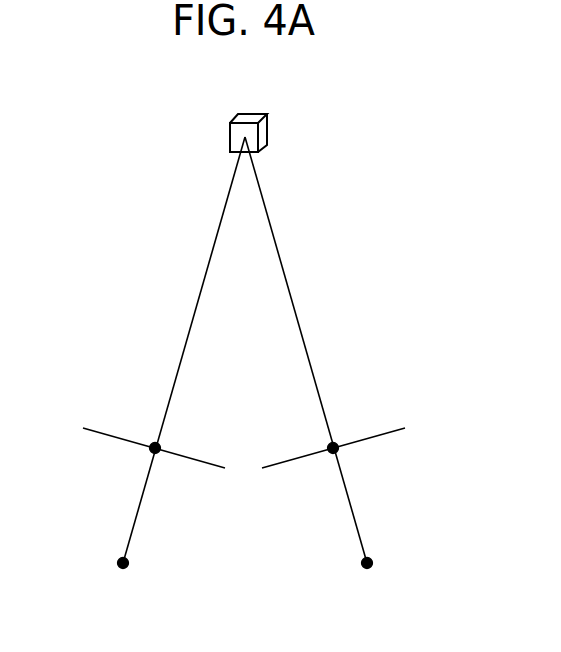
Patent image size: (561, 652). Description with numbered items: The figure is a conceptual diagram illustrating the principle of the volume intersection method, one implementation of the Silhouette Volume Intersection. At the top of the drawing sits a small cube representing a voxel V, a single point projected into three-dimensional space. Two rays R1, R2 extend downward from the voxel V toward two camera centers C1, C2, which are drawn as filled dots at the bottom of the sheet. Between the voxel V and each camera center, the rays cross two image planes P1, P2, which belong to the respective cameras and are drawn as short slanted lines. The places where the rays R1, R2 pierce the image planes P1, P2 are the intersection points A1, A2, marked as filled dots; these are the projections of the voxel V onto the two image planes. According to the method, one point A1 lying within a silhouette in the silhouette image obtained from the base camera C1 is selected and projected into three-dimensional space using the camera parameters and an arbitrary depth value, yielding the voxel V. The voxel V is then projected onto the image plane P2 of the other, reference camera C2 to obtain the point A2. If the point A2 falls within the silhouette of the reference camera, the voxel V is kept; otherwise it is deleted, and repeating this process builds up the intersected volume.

The voxel V is at (268, 130).
The ray R1 is at (270, 225).
The ray R2 is at (218, 225).
The intersection point A1 is at (336, 443).
The intersection point A2 is at (152, 443).
The image plane P1 is at (363, 442).
The image plane P2 is at (123, 442).
The camera center C1 is at (373, 559).
The camera center C2 is at (117, 561).